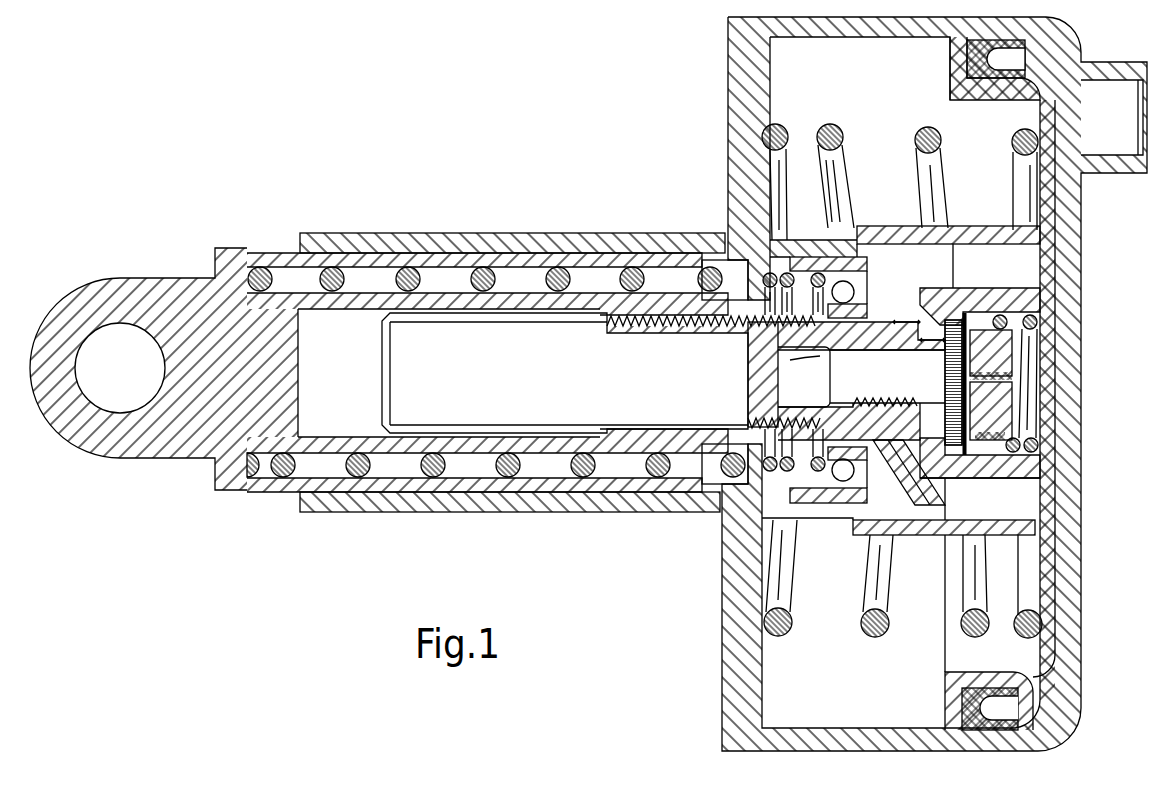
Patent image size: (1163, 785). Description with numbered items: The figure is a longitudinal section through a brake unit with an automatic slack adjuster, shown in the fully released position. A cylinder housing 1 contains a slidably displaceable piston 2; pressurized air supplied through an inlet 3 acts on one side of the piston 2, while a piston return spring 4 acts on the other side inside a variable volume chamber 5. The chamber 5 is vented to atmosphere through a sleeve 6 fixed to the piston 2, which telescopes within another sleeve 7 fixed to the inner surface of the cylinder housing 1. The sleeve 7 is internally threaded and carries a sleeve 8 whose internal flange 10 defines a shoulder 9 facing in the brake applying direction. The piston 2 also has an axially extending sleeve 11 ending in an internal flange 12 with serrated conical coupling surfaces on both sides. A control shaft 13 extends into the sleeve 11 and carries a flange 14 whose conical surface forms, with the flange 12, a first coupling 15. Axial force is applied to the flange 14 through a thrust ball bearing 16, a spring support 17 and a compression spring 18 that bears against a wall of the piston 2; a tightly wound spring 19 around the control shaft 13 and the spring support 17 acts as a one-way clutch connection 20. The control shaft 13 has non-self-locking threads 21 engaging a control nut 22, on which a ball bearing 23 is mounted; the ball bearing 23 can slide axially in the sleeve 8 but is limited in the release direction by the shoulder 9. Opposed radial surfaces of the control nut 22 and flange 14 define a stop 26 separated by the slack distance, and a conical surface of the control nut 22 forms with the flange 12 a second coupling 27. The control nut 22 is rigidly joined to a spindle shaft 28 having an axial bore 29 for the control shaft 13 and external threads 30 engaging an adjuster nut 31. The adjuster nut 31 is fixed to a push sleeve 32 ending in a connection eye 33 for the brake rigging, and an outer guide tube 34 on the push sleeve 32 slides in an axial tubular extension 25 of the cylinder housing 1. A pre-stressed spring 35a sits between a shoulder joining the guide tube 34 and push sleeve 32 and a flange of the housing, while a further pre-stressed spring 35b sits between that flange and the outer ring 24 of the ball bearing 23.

The cylinder housing 1 is at (737, 100).
The piston 2 is at (952, 90).
The inlet 3 is at (1120, 145).
The piston return spring 4 is at (830, 124).
The variable volume chamber 5 is at (793, 68).
The sleeve 6 is at (1017, 230).
The sleeve 7 is at (777, 247).
The sleeve 8 is at (805, 257).
The shoulder 9 is at (853, 262).
The internal flange 10 is at (880, 258).
The sleeve 11 is at (973, 258).
The internal flange 12 is at (933, 257).
The control shaft 13 is at (748, 352).
The flange 14 is at (958, 258).
The first coupling 15 is at (993, 525).
The thrust ball bearing 16 is at (985, 306).
The spring support 17 is at (1022, 352).
The compression spring 18 is at (970, 330).
The tightly wound spring 19 is at (975, 405).
The one-way clutch connection 20 is at (1005, 380).
The non-self-locking threads 21 is at (920, 505).
The control nut 22 is at (882, 500).
The ball bearing 23 is at (818, 520).
The outer ring 24 is at (857, 535).
The axial tubular extension 25 is at (580, 233).
The stop 26 is at (980, 537).
The second coupling 27 is at (947, 535).
The spindle shaft 28 is at (510, 345).
The axial bore 29 is at (795, 397).
The external threads 30 is at (648, 300).
The adjuster nut 31 is at (680, 316).
The push sleeve 32 is at (440, 300).
The connection eye 33 is at (155, 295).
The outer guide tube 34 is at (262, 248).
The pre-stressed spring 35a is at (332, 267).
The pre-stressed spring 35b is at (822, 257).